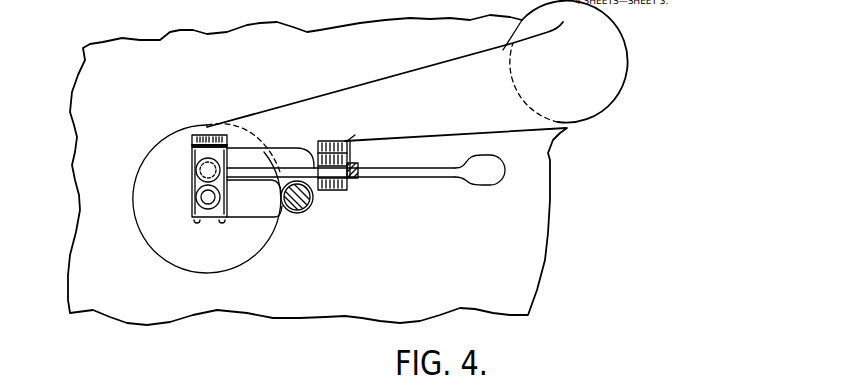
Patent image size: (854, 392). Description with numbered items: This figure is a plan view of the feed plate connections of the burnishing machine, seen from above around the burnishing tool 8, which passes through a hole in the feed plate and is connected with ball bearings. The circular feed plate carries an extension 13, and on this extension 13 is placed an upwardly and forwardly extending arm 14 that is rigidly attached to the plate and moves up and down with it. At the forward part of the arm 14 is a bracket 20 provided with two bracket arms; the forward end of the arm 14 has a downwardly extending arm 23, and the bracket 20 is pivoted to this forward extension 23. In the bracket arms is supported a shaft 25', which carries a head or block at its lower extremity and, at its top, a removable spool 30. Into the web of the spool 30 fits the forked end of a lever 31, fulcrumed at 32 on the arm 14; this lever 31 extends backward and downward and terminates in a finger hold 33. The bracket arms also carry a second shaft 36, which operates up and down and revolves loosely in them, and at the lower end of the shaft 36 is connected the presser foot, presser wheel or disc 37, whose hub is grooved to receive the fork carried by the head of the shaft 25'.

The burnishing tool 8 is at (306, 208).
The extension 13 is at (565, 133).
The arm 14 is at (386, 81).
The bracket 20 is at (193, 153).
The downwardly extending arm 23 is at (227, 147).
The shaft 25' is at (215, 128).
The removable spool 30 is at (193, 168).
The lever 31 is at (408, 174).
The fulcrum 32 is at (356, 141).
The finger hold 33 is at (492, 172).
The shaft 36 is at (205, 200).
The presser wheel 37 is at (207, 198).